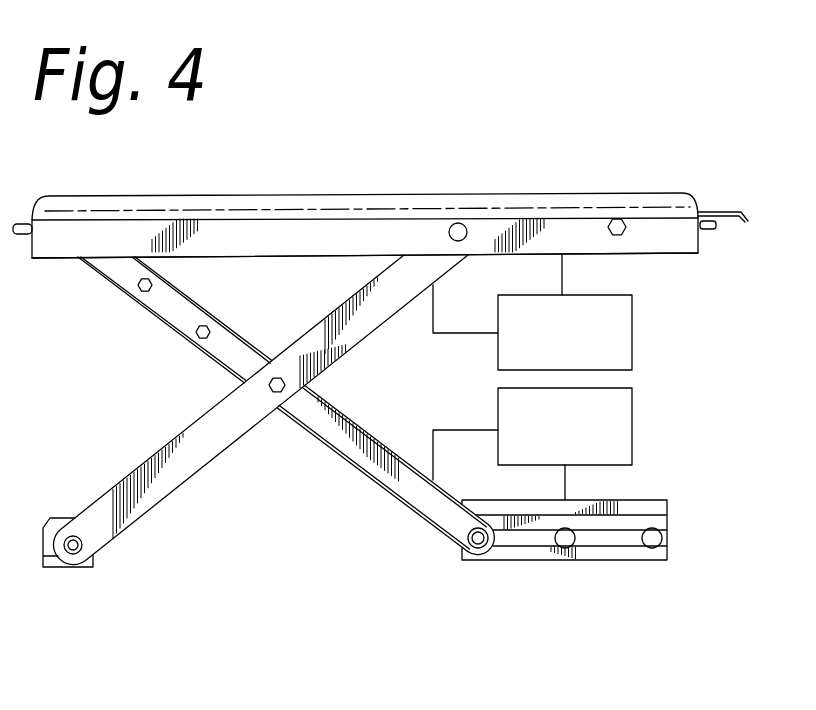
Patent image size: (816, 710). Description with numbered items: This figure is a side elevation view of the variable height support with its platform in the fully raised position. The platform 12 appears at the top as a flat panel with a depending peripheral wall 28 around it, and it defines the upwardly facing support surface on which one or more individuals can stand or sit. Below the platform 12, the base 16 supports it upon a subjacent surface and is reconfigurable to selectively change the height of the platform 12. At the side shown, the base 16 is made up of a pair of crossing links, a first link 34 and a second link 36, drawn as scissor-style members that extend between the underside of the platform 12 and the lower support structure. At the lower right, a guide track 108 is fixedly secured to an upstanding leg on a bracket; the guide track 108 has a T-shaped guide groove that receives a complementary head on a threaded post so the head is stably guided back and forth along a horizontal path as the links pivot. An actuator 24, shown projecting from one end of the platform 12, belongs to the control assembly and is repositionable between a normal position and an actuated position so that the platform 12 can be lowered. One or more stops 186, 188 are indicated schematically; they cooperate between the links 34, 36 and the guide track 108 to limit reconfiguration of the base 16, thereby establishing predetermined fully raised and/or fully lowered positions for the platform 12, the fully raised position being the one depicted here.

The platform 12 is at (349, 193).
The actuator 24 is at (730, 199).
The depending peripheral wall 28 is at (319, 241).
The base 16 is at (272, 466).
The first link 34 is at (205, 448).
The second link 36 is at (398, 473).
The guide track 108 is at (592, 560).
The stop 186 is at (549, 361).
The stop 188 is at (549, 452).